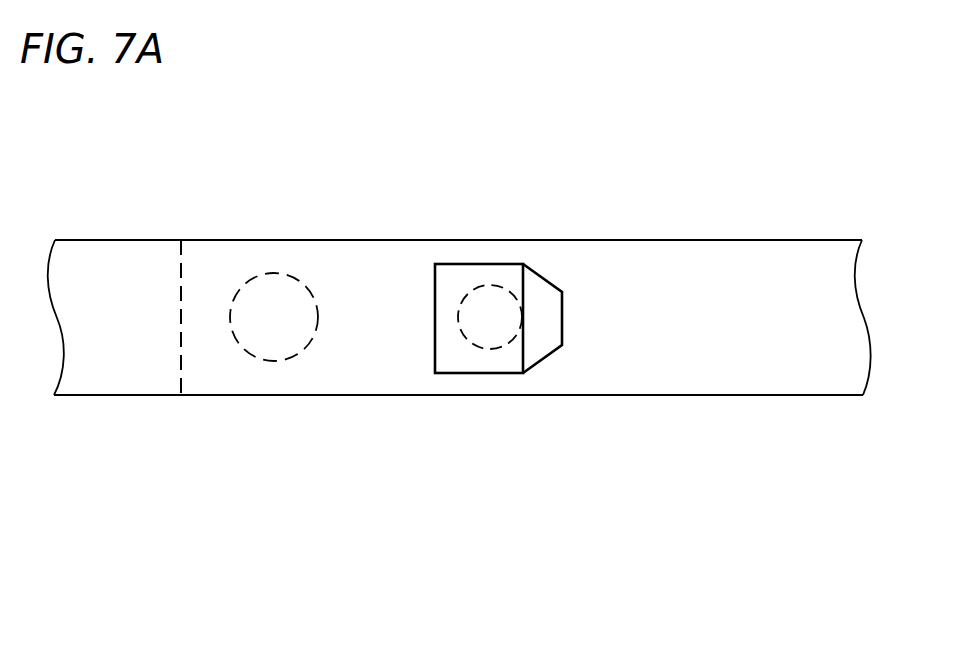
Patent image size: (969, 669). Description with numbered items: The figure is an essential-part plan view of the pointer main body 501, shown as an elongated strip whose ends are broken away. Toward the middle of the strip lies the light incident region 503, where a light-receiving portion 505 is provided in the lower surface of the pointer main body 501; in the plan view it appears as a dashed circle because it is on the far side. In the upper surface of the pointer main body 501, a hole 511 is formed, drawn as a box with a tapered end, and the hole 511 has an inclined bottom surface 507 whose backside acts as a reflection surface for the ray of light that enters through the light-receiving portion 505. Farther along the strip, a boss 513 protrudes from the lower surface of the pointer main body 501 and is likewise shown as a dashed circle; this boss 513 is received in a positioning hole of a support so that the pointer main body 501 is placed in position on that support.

The pointer main body 501 is at (137, 206).
The light incident region 503 is at (503, 316).
The light-receiving portion 505 is at (482, 350).
The inclined bottom surface 507 is at (457, 276).
The hole 511 is at (510, 276).
The boss 513 is at (240, 347).